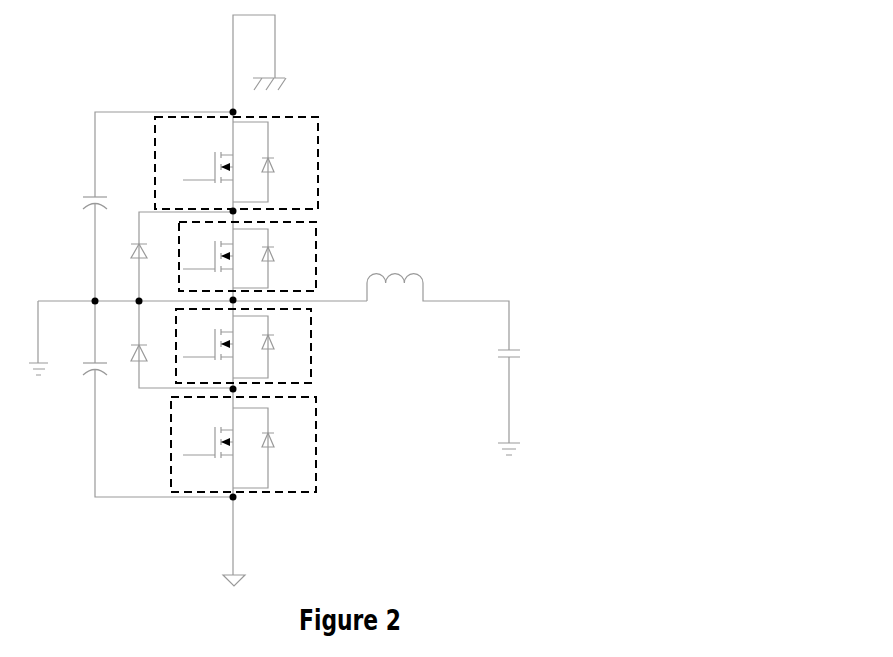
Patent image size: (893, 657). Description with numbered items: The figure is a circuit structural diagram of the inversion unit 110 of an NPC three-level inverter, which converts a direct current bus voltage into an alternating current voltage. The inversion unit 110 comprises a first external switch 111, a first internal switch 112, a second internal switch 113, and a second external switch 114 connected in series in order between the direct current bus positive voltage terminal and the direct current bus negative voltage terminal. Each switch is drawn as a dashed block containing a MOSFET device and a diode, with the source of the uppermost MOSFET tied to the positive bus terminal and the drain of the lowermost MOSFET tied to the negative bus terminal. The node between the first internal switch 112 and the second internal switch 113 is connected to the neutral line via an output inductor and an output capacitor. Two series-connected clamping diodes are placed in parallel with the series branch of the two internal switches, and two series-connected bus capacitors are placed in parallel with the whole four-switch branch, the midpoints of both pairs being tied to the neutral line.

The inversion unit 110 is at (283, 300).
The first external switch 111 is at (330, 135).
The first internal switch 112 is at (329, 238).
The second internal switch 113 is at (326, 356).
The second external switch 114 is at (328, 465).